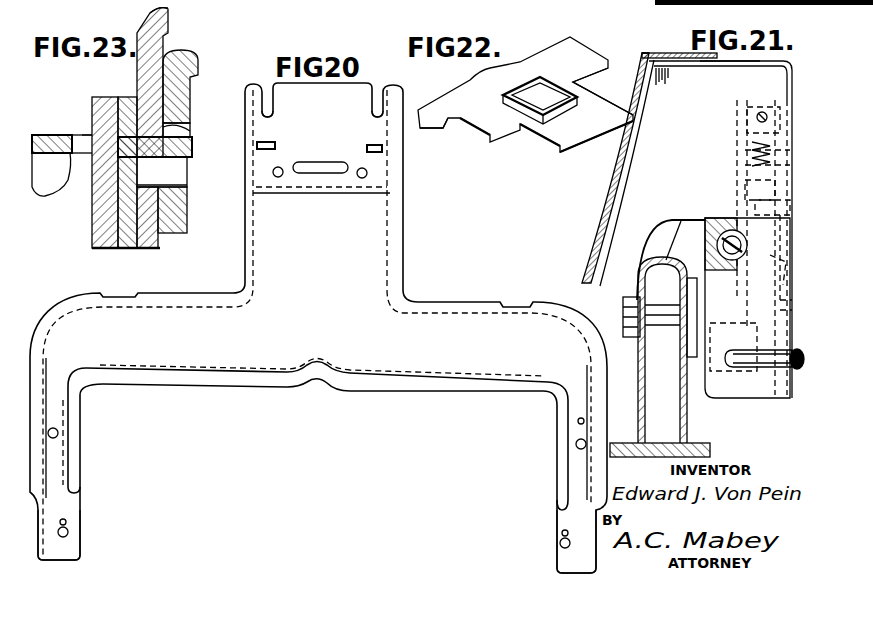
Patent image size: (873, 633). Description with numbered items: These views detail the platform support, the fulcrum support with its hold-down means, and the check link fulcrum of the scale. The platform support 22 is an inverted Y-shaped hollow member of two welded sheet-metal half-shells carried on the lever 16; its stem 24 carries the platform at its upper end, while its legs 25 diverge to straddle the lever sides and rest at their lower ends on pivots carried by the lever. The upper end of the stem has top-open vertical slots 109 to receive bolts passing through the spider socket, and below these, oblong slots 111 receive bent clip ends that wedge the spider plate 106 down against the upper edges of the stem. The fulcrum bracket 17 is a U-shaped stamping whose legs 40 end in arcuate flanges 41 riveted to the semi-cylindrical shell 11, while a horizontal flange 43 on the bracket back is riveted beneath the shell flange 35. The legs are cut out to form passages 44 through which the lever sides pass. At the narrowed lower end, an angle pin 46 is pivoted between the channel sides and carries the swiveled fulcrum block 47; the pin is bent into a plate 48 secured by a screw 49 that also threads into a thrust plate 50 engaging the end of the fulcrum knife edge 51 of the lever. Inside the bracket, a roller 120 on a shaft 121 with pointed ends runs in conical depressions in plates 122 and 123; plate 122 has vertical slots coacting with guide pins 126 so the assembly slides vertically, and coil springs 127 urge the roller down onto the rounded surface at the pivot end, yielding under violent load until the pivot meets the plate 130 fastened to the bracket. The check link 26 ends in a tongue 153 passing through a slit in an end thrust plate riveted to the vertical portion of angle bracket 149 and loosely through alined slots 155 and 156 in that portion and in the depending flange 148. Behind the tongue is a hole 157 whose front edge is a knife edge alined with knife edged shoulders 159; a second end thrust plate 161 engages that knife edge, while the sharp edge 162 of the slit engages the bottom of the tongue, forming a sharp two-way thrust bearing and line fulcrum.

In FIG. 21, the semi-cylindrical shell 11 is at (634, 148).
In FIG. 21, the lever 16 is at (681, 216).
In FIG. 21, the fulcrum bracket 17 is at (739, 388).
In FIG. 20, the platform support 22 is at (410, 290).
In FIG. 20, the stem 24 is at (270, 224).
In FIG. 20, the legs 25 is at (52, 471).
In FIG. 23, the check link 26 is at (64, 135).
In FIG. 22, the check link 26 is at (565, 63).
In FIG. 21, the horizontal flange 35 is at (700, 60).
In FIG. 21, the legs of the bracket 40 is at (660, 112).
In FIG. 21, the arcuate flange 41 is at (630, 198).
In FIG. 21, the horizontal flange 43 is at (745, 63).
In FIG. 21, the passage 44 is at (652, 241).
In FIG. 21, the angle pin 46 is at (755, 388).
In FIG. 21, the fulcrum block 47 is at (720, 373).
In FIG. 21, the plate 48 is at (797, 382).
In FIG. 21, the screw 49 is at (805, 348).
In FIG. 21, the thrust plate 50 is at (789, 310).
In FIG. 21, the fulcrum knife edge 51 is at (707, 360).
In FIG. 23, the spider plate 106 is at (138, 6).
In FIG. 20, the vertical slots 109 is at (410, 127).
In FIG. 20, the oblong slots 111 is at (377, 149).
In FIG. 21, the roller 120 is at (745, 188).
In FIG. 21, the roller shaft 121 is at (720, 268).
In FIG. 21, the plate 122 is at (765, 227).
In FIG. 21, the plate 123 is at (744, 155).
In FIG. 21, the guide pins 126 is at (783, 110).
In FIG. 21, the coil springs 127 is at (753, 143).
In FIG. 21, the plate 130 is at (705, 232).
In FIG. 23, the vertical flange 148 is at (180, 203).
In FIG. 23, the angle bracket 149 is at (150, 31).
In FIG. 23, the tongue 153 is at (192, 150).
In FIG. 22, the tongue 153 is at (588, 127).
In FIG. 23, the slot 155 is at (263, 100).
In FIG. 23, the slot 156 is at (188, 123).
In FIG. 23, the hole 157 is at (133, 116).
In FIG. 22, the hole 157 is at (525, 83).
In FIG. 23, the knife edged shoulders 159 is at (87, 164).
In FIG. 22, the knife edged shoulders 159 is at (613, 78).
In FIG. 23, the end thrust plate 161 is at (95, 248).
In FIG. 23, the sharp edge 162 is at (142, 163).